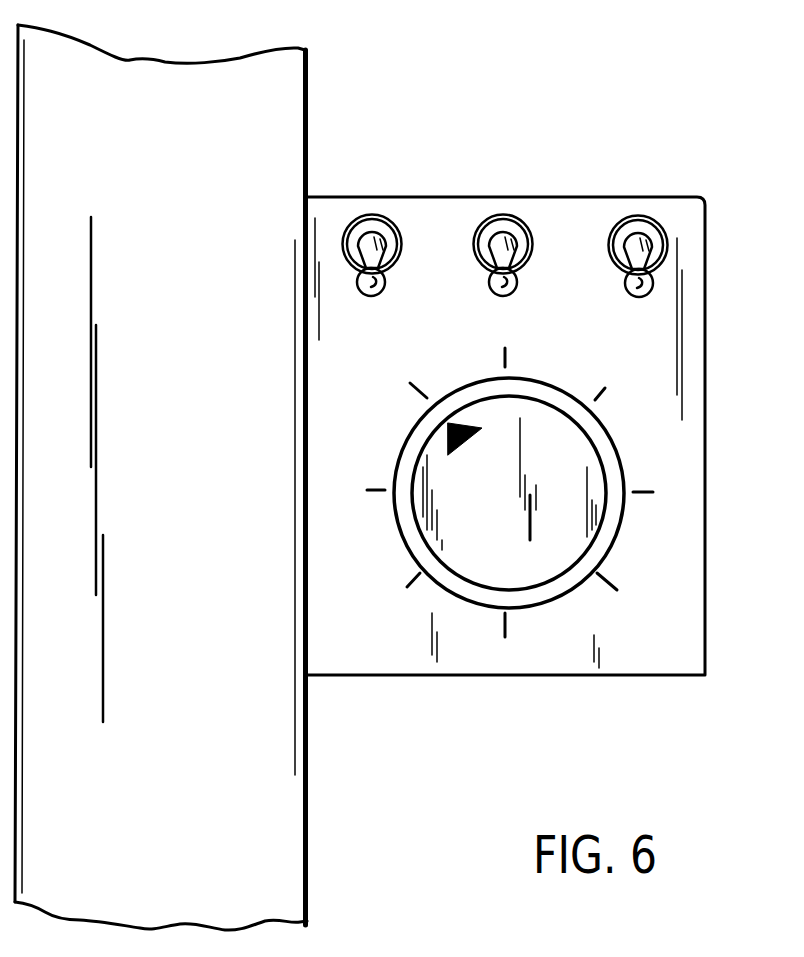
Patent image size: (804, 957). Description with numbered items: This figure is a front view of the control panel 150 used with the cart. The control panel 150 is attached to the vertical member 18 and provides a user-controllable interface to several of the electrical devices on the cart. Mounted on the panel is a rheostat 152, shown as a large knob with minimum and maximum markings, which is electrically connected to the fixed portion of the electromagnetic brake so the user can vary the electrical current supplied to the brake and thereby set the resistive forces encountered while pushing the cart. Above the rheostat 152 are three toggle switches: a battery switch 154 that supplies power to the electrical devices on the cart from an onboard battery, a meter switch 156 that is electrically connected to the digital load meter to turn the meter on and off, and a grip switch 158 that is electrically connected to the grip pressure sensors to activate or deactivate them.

The vertical member 18 is at (283, 87).
The control panel 150 is at (682, 210).
The rheostat 152 is at (527, 388).
The battery switch 154 is at (620, 252).
The meter switch 156 is at (527, 230).
The grip switch 158 is at (397, 233).